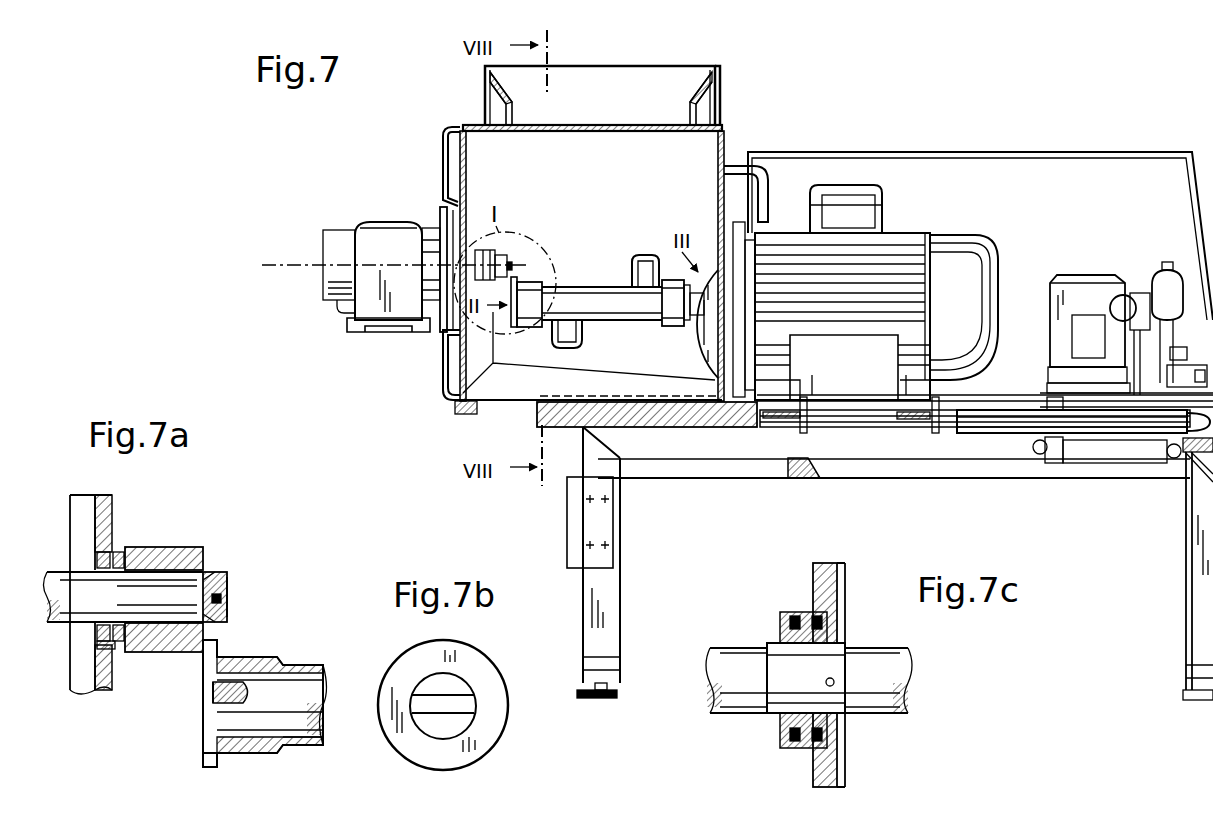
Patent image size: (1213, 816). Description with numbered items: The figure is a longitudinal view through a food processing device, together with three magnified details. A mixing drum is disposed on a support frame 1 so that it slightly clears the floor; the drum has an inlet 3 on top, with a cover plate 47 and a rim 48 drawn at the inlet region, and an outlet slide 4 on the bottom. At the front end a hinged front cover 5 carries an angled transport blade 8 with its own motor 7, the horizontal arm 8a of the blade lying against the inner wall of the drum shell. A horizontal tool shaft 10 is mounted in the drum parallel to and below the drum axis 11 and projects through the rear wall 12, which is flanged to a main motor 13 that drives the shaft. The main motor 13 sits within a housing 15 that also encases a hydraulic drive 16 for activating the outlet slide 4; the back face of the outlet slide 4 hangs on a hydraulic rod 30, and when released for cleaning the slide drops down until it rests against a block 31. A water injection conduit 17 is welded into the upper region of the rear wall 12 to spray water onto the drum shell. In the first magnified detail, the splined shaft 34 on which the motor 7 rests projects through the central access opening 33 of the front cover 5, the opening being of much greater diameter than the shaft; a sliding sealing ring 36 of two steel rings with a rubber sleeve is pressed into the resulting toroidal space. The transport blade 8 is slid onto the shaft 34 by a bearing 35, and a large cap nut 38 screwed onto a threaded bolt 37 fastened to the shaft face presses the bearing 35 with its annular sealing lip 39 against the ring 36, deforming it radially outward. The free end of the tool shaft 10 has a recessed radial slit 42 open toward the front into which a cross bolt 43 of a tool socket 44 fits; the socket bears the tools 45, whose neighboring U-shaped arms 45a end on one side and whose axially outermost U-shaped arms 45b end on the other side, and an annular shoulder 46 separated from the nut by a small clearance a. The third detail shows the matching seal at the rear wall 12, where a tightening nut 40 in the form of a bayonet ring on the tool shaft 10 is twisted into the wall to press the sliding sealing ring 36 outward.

In FIG. 7, the support frame 1 is at (1198, 617).
In FIG. 7, the inlet 3 is at (624, 92).
In FIG. 7, the outlet slide 4 is at (704, 412).
In FIG. 7, the front cover 5 is at (446, 130).
In FIG. 7A, the front cover 5 is at (105, 517).
In FIG. 7, the motor 7 is at (372, 232).
In FIG. 7, the transport blade 8 is at (468, 362).
In FIG. 7, the horizontal arm 8a is at (462, 401).
In FIG. 7, the tool shaft 10 is at (694, 318).
In FIG. 7A, the tool shaft 10 is at (291, 708).
In FIG. 7C, the tool shaft 10 is at (732, 690).
In FIG. 7, the drum axis 11 is at (276, 263).
In FIG. 7, the rear wall 12 is at (726, 140).
In FIG. 7C, the rear wall 12 is at (812, 582).
In FIG. 7, the main motor 13 is at (966, 294).
In FIG. 7, the housing 15 is at (922, 152).
In FIG. 7, the hydraulic drive 16 is at (1106, 258).
In FIG. 7, the water injection conduit 17 is at (778, 182).
In FIG. 7, the hydraulic rod 30 is at (871, 416).
In FIG. 7, the block 31 is at (780, 470).
In FIG. 7A, the access opening 33 is at (121, 548).
In FIG. 7A, the splined shaft 34 is at (94, 609).
In FIG. 7A, the bearing 35 is at (183, 547).
In FIG. 7A, the sliding sealing ring 36 is at (117, 650).
In FIG. 7C, the sliding sealing ring 36 is at (805, 620).
In FIG. 7A, the threaded bolt 37 is at (228, 577).
In FIG. 7A, the cap nut 38 is at (228, 608).
In FIG. 7A, the annular sealing lip 39 is at (208, 570).
In FIG. 7C, the tightening nut 40 is at (787, 743).
In FIG. 7A, the radial slit 42 is at (203, 700).
In FIG. 7B, the radial slit 42 is at (453, 704).
In FIG. 7A, the cross bolt 43 is at (238, 697).
In FIG. 7B, the cross bolt 43 is at (467, 709).
In FIG. 7, the tool socket 44 is at (562, 287).
In FIG. 7A, the tool socket 44 is at (308, 740).
In FIG. 7, the tools 45 is at (645, 255).
In FIG. 7, the neighboring U-shaped arms 45a is at (631, 268).
In FIG. 7, the axially outermost U-shaped arms 45b is at (535, 327).
In FIG. 7A, the annular shoulder 46 is at (220, 760).
In FIG. 7, the cover plate 47 is at (612, 131).
In FIG. 7, the hopper rim 48 is at (722, 78).
In FIG. 7A, the clearance a is at (200, 659).